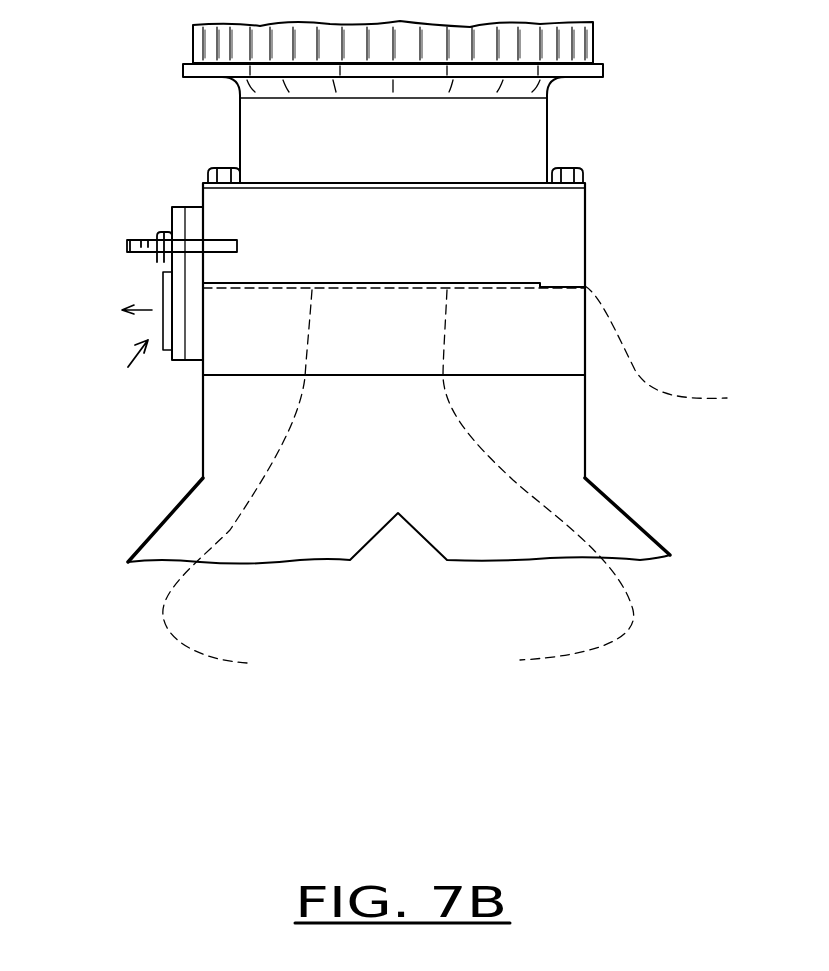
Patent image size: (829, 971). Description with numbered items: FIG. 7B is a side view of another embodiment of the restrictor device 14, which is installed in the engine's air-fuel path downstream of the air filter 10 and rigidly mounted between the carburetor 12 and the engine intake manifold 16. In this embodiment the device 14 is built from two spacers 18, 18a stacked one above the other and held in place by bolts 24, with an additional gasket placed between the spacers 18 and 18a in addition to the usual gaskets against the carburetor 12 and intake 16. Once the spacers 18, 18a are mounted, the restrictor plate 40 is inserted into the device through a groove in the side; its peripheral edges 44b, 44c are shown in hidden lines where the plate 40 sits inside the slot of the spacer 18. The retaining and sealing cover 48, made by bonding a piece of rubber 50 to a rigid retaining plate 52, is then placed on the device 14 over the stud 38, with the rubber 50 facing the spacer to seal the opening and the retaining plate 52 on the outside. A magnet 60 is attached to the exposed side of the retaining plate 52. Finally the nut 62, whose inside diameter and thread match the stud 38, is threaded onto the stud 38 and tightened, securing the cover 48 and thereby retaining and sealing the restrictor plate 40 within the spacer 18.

The air filter 10 is at (593, 43).
The carburetor 12 is at (548, 136).
The restrictor device 14 is at (460, 430).
The engine intake manifold 16 is at (587, 480).
The spacer 18 is at (587, 342).
The spacer 18a is at (585, 203).
The bolts 24 is at (208, 172).
The stud 38 is at (228, 235).
The restrictor plate 40 is at (538, 482).
The peripheral edge 44b is at (617, 281).
The peripheral edge 44c is at (237, 484).
The retaining and sealing cover 48 is at (130, 366).
The rubber 50 is at (192, 207).
The retaining plate 52 is at (172, 233).
The magnet 60 is at (167, 352).
The nut 62 is at (163, 272).